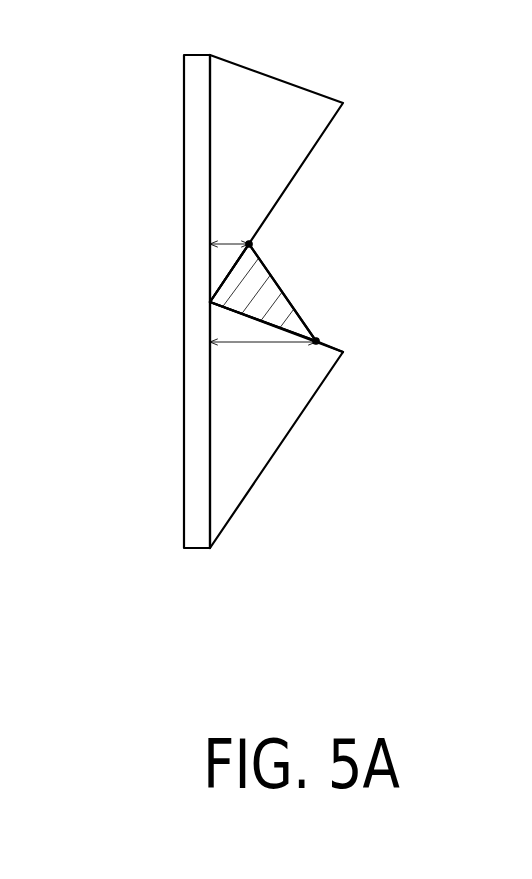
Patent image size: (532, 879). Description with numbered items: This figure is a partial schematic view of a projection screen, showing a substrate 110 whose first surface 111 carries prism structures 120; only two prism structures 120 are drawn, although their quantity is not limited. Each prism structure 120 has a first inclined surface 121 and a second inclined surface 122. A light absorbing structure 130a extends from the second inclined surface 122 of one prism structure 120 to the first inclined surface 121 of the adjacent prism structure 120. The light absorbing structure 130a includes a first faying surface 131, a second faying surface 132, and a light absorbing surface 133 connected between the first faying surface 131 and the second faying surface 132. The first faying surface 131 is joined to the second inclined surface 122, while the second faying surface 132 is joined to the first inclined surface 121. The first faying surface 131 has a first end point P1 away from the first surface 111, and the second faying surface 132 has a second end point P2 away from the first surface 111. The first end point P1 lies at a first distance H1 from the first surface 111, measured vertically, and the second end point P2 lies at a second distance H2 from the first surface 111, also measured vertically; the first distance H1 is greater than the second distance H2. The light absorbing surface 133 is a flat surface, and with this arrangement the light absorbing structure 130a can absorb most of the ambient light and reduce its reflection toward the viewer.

The substrate 110 is at (198, 538).
The first surface 111 is at (207, 456).
The prism structure 120 is at (258, 437).
The first inclined surface 121 is at (326, 135).
The second inclined surface 122 is at (333, 345).
The light absorbing structure 130a is at (427, 180).
The first faying surface 131 is at (274, 324).
The second faying surface 132 is at (243, 259).
The light absorbing surface 133 is at (281, 288).
The first end point P1 is at (316, 341).
The second end point P2 is at (248, 242).
The first distance H1 is at (243, 345).
The second distance H2 is at (228, 242).